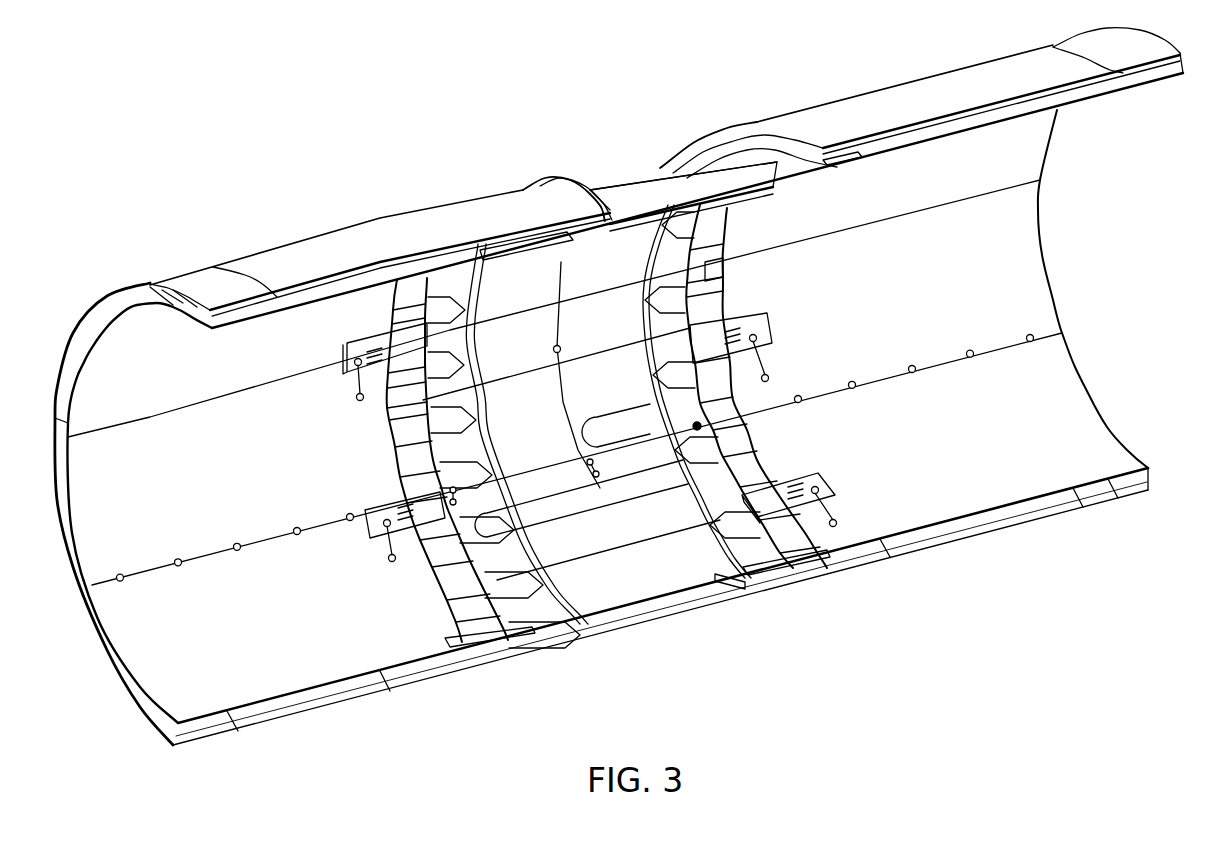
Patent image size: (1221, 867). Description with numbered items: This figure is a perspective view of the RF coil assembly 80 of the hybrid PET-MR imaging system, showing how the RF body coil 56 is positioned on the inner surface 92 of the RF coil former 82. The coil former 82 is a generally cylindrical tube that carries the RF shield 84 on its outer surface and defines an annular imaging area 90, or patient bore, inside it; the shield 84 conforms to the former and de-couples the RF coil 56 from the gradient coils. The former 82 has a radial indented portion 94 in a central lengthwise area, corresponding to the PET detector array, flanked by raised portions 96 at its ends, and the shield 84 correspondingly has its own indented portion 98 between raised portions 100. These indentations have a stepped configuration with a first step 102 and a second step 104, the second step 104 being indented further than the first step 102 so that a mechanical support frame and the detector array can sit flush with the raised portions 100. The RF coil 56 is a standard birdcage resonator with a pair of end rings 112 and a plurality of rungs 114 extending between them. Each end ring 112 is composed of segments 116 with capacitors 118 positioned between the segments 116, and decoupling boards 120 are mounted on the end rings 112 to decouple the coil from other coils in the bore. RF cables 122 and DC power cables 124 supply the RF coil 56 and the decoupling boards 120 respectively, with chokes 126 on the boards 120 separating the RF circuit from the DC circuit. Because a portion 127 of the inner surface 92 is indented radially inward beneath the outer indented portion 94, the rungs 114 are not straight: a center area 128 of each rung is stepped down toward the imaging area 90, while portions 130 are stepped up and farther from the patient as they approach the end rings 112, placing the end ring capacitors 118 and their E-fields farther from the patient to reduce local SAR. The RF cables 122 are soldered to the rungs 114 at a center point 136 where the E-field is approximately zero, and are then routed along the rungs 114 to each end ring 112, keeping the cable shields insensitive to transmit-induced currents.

The RF body coil 56 is at (850, 446).
The RF coil assembly 80 is at (312, 182).
The RF coil former 82 is at (1137, 82).
The RF shield 84 is at (257, 265).
The imaging area 90 is at (1105, 316).
The inner surface 92 is at (200, 490).
The indented portion 94 is at (648, 137).
The raised portions 96 is at (400, 205).
The indented portion 98 is at (683, 176).
The raised portions 100 is at (892, 76).
The first step 102 is at (545, 183).
The second step 104 is at (625, 188).
The end rings 112 is at (735, 303).
The rungs 114 is at (532, 384).
The segments 116 is at (733, 250).
The capacitors 118 is at (718, 268).
The decoupling boards 120 is at (348, 343).
The RF cables 122 is at (590, 420).
The DC power cables 124 is at (352, 385).
The chokes 126 is at (378, 338).
The indented portion of the inner surface 127 is at (727, 580).
The center area 128 is at (562, 278).
The stepped-up portions 130 is at (458, 378).
The center point 136 is at (564, 348).